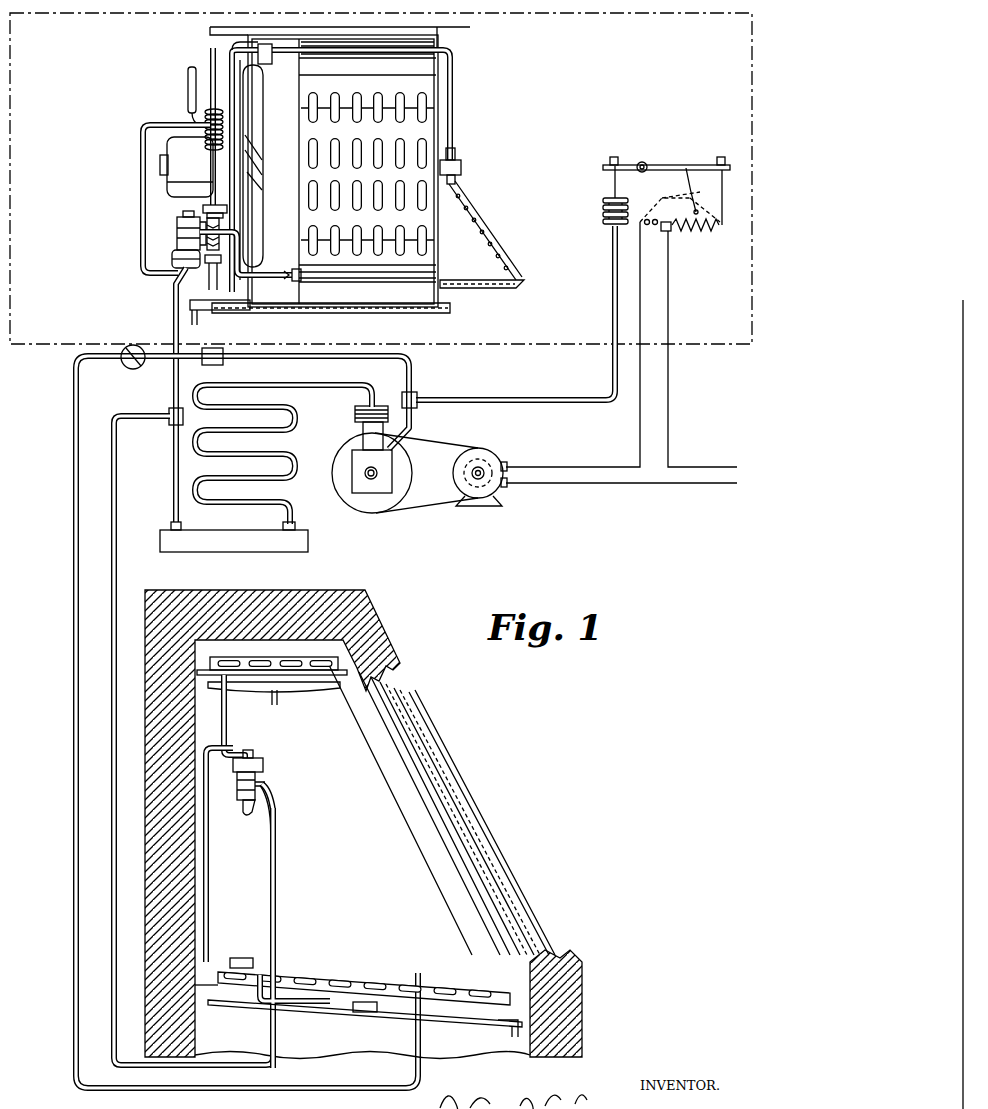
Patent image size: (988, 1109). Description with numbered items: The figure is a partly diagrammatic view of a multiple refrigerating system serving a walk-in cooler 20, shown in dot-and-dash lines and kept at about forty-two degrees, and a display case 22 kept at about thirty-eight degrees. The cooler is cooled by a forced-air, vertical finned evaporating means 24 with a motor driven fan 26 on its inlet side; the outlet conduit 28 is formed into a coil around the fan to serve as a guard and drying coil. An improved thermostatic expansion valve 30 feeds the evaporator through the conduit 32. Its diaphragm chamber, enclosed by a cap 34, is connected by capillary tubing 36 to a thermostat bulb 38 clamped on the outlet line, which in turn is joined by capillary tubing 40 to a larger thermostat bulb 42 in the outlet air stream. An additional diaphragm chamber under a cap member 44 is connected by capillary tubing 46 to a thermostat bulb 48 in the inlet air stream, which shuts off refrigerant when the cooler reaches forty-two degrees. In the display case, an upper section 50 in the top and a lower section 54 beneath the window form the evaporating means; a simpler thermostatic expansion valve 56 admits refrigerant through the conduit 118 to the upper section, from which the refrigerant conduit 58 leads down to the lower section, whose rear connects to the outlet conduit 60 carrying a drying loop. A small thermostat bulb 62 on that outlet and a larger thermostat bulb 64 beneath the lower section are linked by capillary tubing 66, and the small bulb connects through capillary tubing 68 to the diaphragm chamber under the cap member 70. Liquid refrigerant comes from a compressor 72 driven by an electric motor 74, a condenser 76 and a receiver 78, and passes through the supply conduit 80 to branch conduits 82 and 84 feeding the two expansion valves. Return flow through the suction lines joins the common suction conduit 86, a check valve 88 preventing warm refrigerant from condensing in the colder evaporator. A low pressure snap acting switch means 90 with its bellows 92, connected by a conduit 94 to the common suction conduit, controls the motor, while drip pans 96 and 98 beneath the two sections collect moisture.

The walk-in cooler 20 is at (589, 15).
The display case 22 is at (428, 626).
The evaporating means 24 is at (320, 130).
The motor driven fan 26 is at (258, 238).
The outlet conduit 28 is at (212, 49).
The thermostatic expansion valve 30 is at (176, 232).
The conduit 32 is at (277, 281).
The cap 34 is at (203, 208).
The capillary tubing 36 is at (208, 125).
The thermostat bulb 38 is at (270, 63).
The capillary tubing 40 is at (454, 103).
The thermostat bulb 42 is at (462, 162).
The cap member 44 is at (172, 262).
The capillary tubing 46 is at (141, 215).
The thermostat bulb 48 is at (186, 88).
The upper section of evaporating means 50 is at (238, 661).
The lower section of evaporating means 54 is at (434, 986).
The thermostatic expansion valve 56 is at (268, 790).
The refrigerant conduit 58 is at (402, 812).
The outlet conduit 60 is at (73, 663).
The thermostat bulb 62 is at (246, 958).
The thermostat bulb 64 is at (363, 1014).
The capillary tubing 66 is at (302, 1003).
The capillary tubing 68 is at (208, 882).
The cap member 70 is at (259, 767).
The compressor 72 is at (360, 436).
The electric motor 74 is at (481, 458).
The condenser 76 is at (280, 470).
The receiver 78 is at (309, 545).
The supply conduit 80 is at (176, 474).
The branch conduit 82 is at (173, 311).
The branch conduit 84 is at (117, 665).
The common suction conduit 86 is at (355, 358).
The check valve 88 is at (137, 370).
The low pressure snap acting switch means 90 is at (696, 166).
The bellows 92 is at (602, 210).
The conduit 94 is at (567, 393).
The drip pan 96 is at (305, 692).
The drip pan 98 is at (448, 1024).
The conduit 118 is at (227, 722).